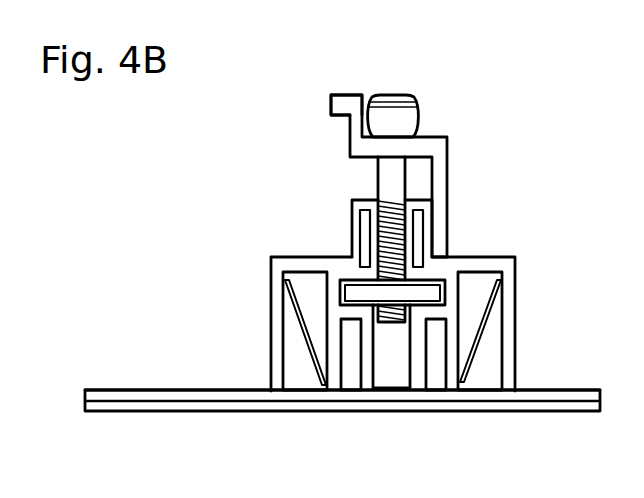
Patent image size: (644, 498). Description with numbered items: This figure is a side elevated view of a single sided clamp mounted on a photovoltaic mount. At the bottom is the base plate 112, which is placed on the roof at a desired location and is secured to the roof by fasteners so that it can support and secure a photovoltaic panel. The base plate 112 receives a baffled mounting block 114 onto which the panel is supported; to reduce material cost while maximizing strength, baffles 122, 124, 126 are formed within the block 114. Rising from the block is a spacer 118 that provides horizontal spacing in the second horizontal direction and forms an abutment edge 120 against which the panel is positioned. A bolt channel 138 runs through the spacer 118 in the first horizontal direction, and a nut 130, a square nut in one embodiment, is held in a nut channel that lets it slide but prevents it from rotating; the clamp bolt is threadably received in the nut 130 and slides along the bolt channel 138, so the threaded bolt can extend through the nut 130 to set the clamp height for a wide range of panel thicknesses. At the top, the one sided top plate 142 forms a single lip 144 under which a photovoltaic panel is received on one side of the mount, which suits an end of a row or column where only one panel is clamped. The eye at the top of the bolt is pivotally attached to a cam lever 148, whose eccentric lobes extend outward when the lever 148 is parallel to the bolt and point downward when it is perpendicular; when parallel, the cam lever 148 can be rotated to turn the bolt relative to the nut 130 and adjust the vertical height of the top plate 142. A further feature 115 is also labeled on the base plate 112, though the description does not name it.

The base plate 112 is at (226, 412).
The baffled mounting block 114 is at (270, 287).
The upper surface of base plate 115 is at (133, 389).
The spacer 118 is at (418, 202).
The abutment edge 120 is at (350, 226).
The baffle 122 is at (311, 348).
The baffle 124 is at (343, 364).
The baffle 126 is at (440, 334).
The nut 130 is at (343, 292).
The bolt channel 138 is at (393, 372).
The one sided top plate 142 is at (338, 93).
The lip 144 is at (345, 115).
The cam lever 148 is at (420, 112).